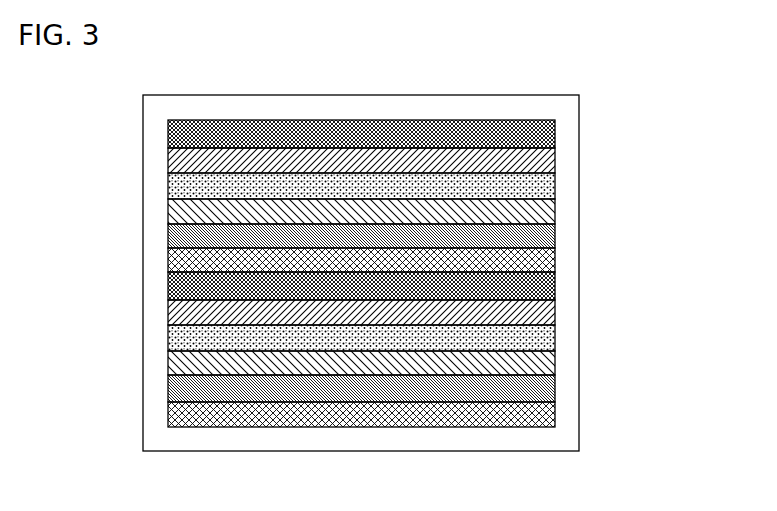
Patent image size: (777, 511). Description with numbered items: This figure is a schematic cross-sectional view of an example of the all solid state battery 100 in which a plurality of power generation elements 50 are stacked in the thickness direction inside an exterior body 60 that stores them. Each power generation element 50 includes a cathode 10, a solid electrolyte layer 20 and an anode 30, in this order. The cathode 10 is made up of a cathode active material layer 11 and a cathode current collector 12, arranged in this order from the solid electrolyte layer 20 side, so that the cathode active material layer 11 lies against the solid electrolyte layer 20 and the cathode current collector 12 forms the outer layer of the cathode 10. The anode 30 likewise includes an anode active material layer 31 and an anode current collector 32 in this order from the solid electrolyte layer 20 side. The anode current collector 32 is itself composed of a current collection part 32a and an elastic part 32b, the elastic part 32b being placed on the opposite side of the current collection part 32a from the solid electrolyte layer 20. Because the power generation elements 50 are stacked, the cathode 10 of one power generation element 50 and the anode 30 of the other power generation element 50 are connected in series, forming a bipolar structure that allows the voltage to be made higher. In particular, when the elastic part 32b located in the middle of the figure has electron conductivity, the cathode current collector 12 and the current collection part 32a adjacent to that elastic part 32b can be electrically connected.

The all solid state battery 100 is at (548, 74).
The exterior body 60 is at (550, 106).
The power generation element 50 is at (403, 273).
The cathode 10 is at (415, 222).
The cathode current collector 12 is at (555, 131).
The cathode active material layer 11 is at (395, 236).
The solid electrolyte layer 20 is at (550, 182).
The anode 30 is at (378, 312).
The anode active material layer 31 is at (550, 209).
The anode current collector 32 is at (358, 325).
The current collection part 32a is at (168, 238).
The elastic part 32b is at (168, 262).